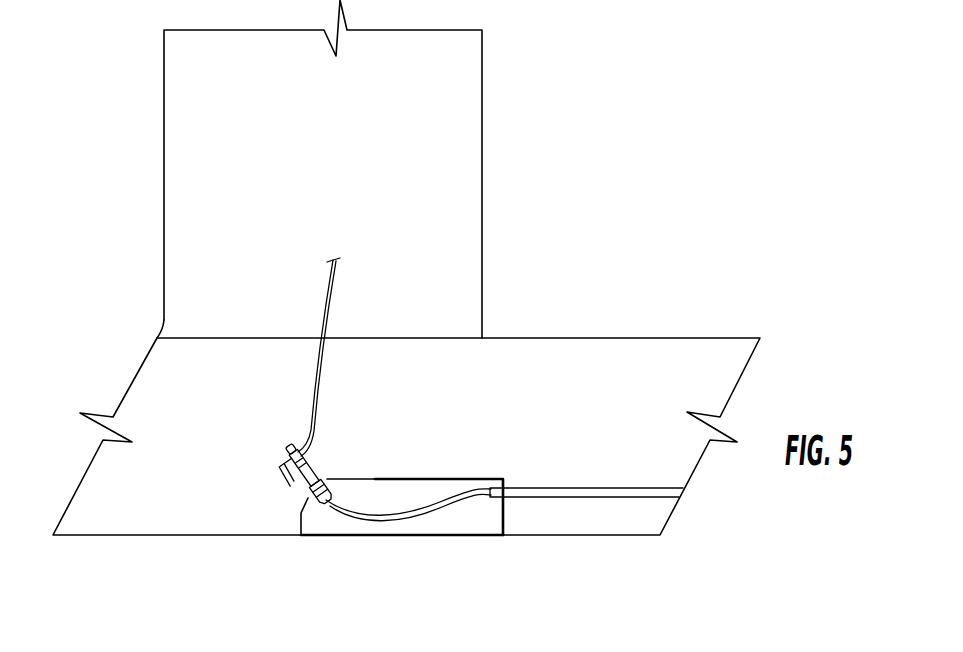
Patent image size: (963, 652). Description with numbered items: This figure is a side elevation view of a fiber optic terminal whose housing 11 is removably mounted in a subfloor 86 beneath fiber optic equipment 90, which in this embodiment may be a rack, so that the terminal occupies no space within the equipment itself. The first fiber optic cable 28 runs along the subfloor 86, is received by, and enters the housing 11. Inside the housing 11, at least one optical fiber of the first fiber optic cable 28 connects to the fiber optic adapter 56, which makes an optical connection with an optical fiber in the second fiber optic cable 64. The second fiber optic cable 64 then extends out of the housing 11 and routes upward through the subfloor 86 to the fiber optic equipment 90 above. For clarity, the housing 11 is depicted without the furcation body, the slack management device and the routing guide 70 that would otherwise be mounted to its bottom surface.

The fiber optic equipment 90 is at (484, 186).
The subfloor 86 is at (644, 378).
The second fiber optic cable 64 is at (313, 380).
The fiber optic adapter 56 is at (308, 500).
The housing 11 is at (436, 478).
The routing guide 70 is at (348, 535).
The first fiber optic cable 28 is at (568, 497).